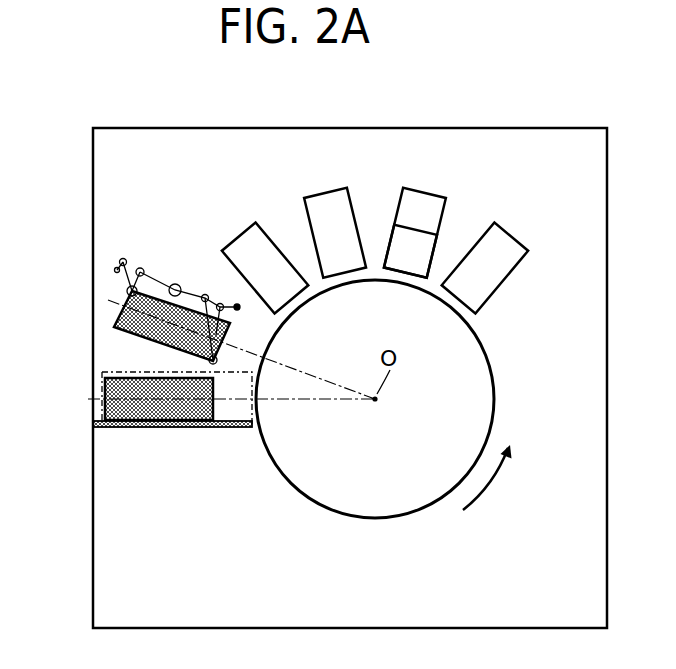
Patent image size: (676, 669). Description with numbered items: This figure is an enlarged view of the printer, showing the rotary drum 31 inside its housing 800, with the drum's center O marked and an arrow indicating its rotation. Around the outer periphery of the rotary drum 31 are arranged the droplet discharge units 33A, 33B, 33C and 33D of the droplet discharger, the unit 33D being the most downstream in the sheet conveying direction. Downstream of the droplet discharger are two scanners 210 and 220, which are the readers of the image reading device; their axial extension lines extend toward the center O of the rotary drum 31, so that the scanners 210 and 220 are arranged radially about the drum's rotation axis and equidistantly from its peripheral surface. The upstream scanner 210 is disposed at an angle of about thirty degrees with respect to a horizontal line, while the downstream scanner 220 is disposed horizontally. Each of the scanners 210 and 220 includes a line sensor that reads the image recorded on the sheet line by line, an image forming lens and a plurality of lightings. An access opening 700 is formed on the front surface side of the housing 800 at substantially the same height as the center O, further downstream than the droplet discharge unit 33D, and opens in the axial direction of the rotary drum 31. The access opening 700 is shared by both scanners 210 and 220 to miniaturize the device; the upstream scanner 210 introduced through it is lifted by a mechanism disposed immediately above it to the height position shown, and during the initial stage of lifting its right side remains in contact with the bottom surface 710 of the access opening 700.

The rotary drum 31 is at (363, 497).
The droplet discharge unit 33A is at (505, 240).
The droplet discharge unit 33B is at (421, 205).
The droplet discharge unit 33C is at (328, 205).
The droplet discharge unit 33D is at (245, 243).
The scanner 210 is at (115, 323).
The scanner 220 is at (110, 398).
The access opening 700 is at (117, 362).
The bottom surface 710 is at (192, 430).
The housing 800 is at (92, 511).